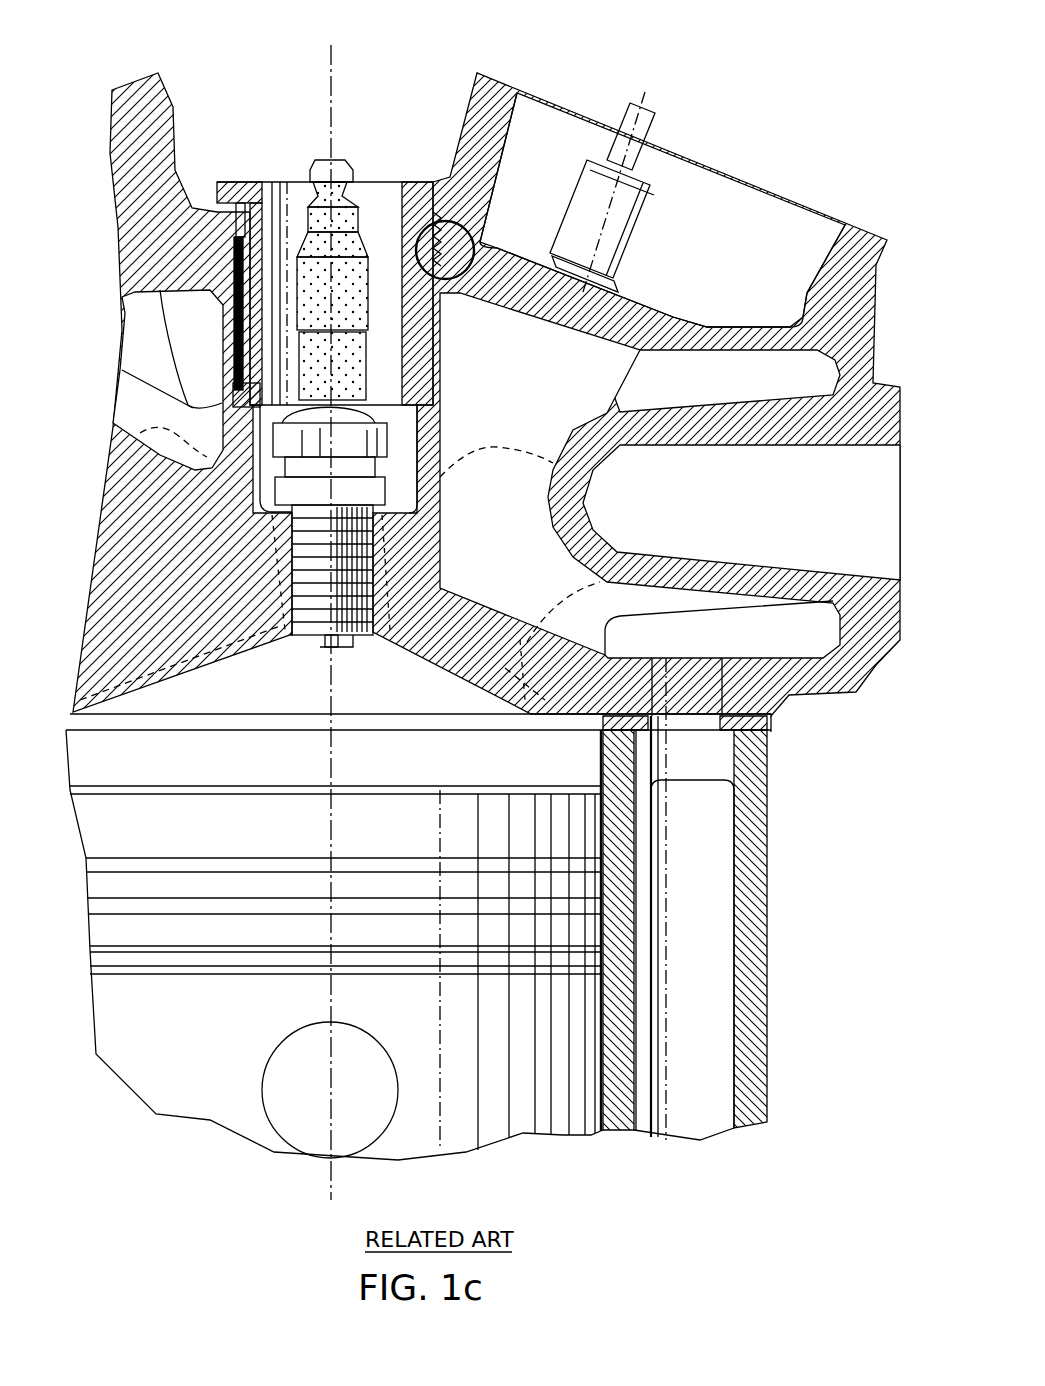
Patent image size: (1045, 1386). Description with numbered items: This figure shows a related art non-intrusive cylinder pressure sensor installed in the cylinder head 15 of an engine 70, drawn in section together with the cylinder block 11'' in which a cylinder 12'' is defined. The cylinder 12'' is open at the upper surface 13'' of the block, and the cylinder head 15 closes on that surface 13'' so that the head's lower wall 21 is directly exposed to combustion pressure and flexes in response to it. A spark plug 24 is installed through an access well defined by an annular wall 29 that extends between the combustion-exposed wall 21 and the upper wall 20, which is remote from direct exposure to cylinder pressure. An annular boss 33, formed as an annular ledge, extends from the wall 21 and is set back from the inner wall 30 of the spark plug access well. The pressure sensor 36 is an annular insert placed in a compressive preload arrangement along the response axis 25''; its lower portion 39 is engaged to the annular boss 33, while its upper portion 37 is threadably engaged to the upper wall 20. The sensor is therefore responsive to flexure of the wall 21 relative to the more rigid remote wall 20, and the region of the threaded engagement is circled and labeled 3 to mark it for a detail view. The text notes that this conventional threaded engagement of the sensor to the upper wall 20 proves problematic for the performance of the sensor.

The detail circle (FIG. 3 view) 3 is at (450, 288).
The cylinder block 11'' is at (750, 899).
The cylinder 12'' is at (605, 961).
The upper surface 13'' is at (825, 769).
The cylinder head 15 is at (867, 222).
The upper wall 20 is at (508, 275).
The wall 21 is at (273, 623).
The spark plug 24 is at (314, 163).
The response axis 25'' is at (389, 610).
The annular wall 29 is at (452, 433).
The access well inner wall 30 is at (425, 463).
The annular boss 33 is at (442, 399).
The pressure sensor 36 is at (406, 176).
The upper portion of sensor 37 is at (410, 177).
The lower portion of sensor 39 is at (228, 388).
The engine 70 is at (748, 172).